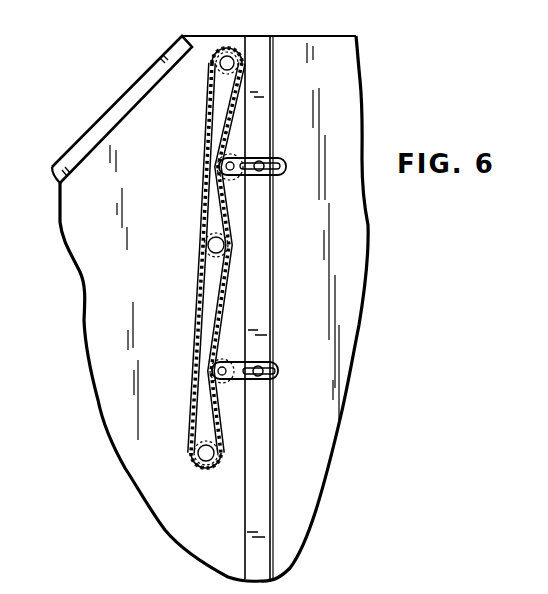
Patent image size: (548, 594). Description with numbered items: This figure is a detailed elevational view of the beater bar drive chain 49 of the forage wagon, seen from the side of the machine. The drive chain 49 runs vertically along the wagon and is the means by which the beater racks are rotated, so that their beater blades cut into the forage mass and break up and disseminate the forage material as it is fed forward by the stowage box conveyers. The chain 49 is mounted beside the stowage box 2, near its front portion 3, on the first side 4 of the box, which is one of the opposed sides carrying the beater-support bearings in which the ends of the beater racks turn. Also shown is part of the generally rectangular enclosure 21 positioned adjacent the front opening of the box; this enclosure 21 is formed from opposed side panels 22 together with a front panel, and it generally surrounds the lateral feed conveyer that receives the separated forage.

The stowage box 2 is at (205, 294).
The front portion 3 is at (239, 36).
The first side 4 is at (351, 88).
The enclosure 21 is at (79, 142).
The side panel 22 is at (73, 220).
The drive chain 49 is at (200, 220).